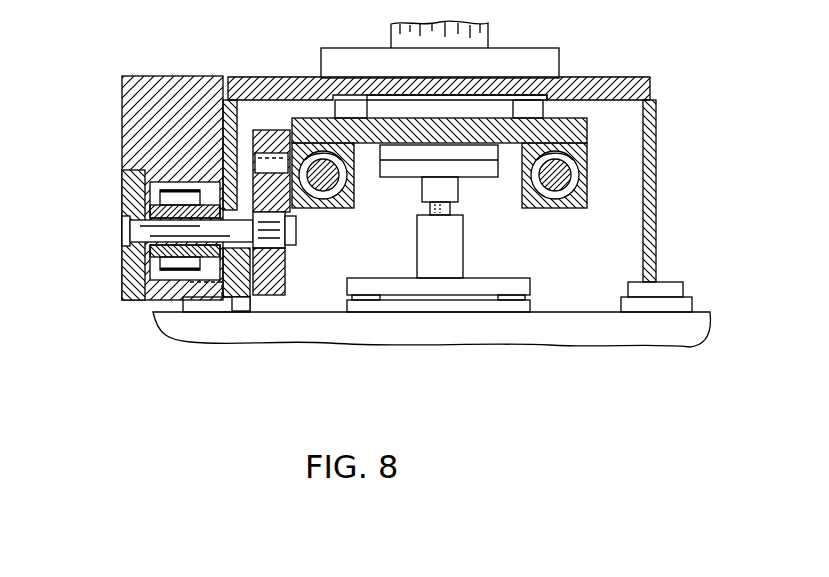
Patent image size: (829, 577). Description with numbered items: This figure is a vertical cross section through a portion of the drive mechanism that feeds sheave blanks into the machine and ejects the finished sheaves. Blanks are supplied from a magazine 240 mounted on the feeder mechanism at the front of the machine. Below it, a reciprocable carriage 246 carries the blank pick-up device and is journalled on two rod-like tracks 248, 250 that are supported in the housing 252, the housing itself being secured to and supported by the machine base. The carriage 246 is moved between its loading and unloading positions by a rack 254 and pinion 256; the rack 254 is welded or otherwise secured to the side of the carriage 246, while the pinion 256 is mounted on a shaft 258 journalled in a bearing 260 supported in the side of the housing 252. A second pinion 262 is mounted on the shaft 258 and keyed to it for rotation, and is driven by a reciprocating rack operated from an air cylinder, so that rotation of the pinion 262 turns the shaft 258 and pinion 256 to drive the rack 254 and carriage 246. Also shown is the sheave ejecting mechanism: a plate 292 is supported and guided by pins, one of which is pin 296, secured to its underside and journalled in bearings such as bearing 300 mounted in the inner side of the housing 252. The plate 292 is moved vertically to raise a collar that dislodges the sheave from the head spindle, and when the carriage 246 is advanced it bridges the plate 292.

The magazine 240 is at (488, 24).
The reciprocable carriage 246 is at (571, 126).
The rod-like track 248 is at (348, 192).
The rod-like track 250 is at (562, 190).
The housing 252 is at (656, 130).
The rack 254 is at (262, 130).
The pinion 256 is at (278, 293).
The shaft 258 is at (150, 232).
The bearing 260 is at (232, 290).
The pinion 262 is at (170, 250).
The plate 292 is at (480, 175).
The pin 296 is at (432, 210).
The bearing 300 is at (460, 250).